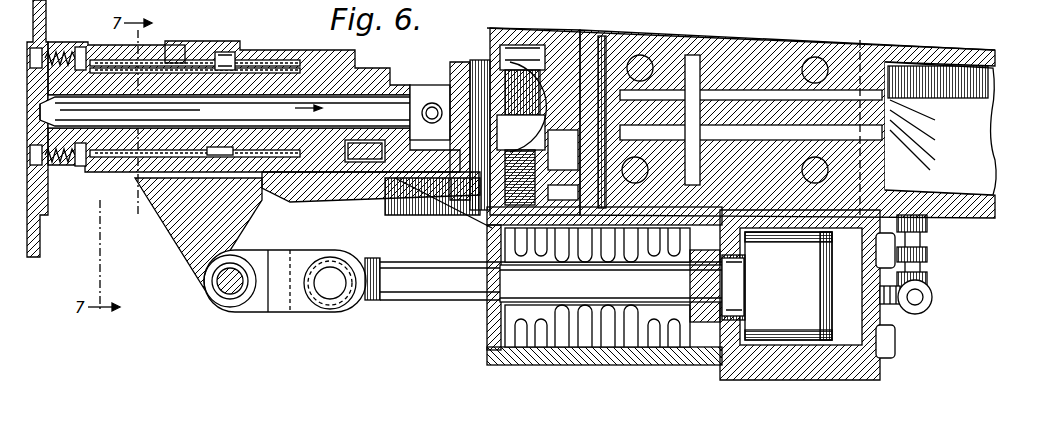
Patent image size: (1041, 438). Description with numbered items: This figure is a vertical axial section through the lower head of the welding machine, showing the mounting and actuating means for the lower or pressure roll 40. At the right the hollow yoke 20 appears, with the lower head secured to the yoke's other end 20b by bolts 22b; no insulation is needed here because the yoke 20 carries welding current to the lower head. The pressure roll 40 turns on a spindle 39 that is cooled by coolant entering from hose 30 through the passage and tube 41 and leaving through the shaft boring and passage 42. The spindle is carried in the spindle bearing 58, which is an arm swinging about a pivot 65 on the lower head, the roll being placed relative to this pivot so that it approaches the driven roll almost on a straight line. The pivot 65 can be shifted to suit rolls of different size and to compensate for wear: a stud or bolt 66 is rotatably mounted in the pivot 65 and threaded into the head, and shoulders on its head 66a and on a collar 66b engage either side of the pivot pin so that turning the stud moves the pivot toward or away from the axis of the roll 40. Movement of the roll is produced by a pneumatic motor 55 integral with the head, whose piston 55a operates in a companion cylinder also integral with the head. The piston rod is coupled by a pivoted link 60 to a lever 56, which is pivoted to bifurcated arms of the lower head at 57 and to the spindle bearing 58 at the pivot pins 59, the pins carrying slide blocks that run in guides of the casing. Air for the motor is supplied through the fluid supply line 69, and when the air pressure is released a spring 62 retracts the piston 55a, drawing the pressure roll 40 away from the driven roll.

The pressure roll 40 is at (46, 10).
The passage and tube 41 is at (33, 105).
The shaft boring and passage 42 is at (40, 133).
The lever pivot 57 is at (278, 63).
The spindle bearing 58 is at (185, 45).
The pivot pins 59 is at (172, 48).
The spindle 39 is at (222, 53).
The stud or bolt 66 is at (487, 70).
The head of stud 66a is at (520, 48).
The collar 66b is at (450, 200).
The pivot 65 is at (552, 85).
The lever 56 is at (186, 258).
The pivoted link 60 is at (284, 312).
The pneumatic motor 55 is at (768, 365).
The piston 55a is at (710, 362).
The spring 62 is at (588, 347).
The fluid supply line 69 is at (928, 302).
The yoke's other end 20b is at (765, 58).
The bolts 22b is at (822, 58).
The hose 30 is at (641, 0).
The yoke 20 is at (975, 117).